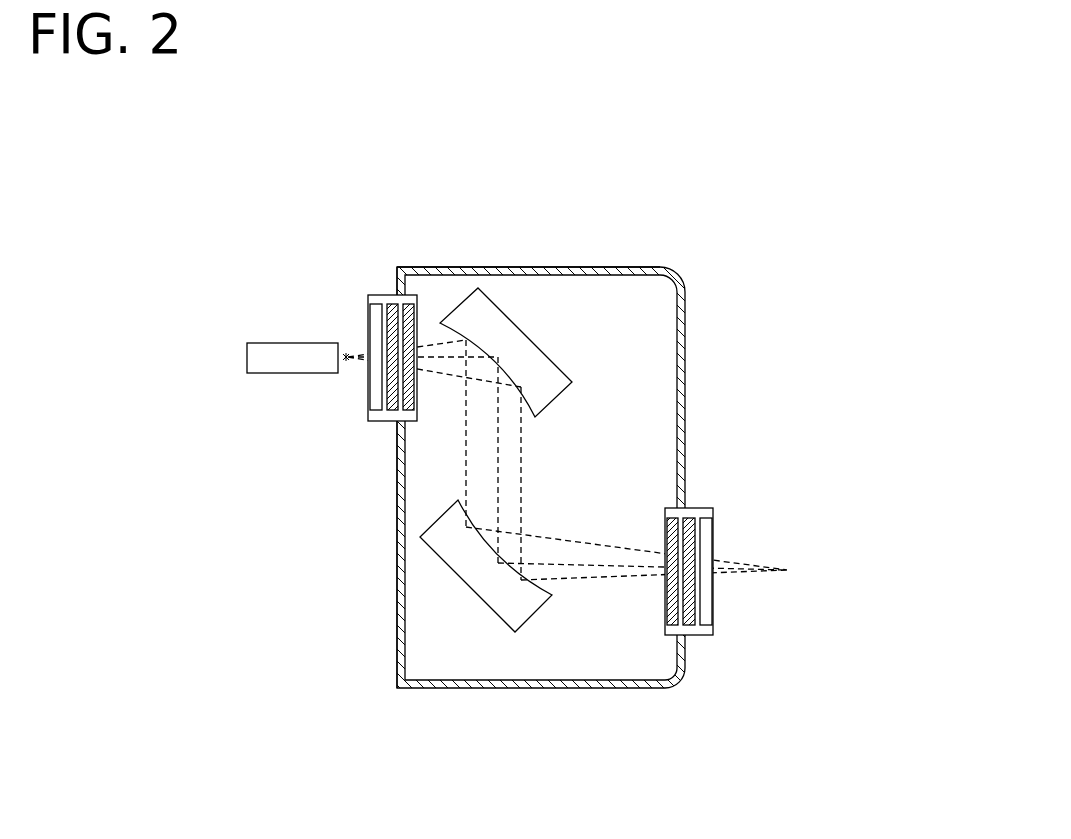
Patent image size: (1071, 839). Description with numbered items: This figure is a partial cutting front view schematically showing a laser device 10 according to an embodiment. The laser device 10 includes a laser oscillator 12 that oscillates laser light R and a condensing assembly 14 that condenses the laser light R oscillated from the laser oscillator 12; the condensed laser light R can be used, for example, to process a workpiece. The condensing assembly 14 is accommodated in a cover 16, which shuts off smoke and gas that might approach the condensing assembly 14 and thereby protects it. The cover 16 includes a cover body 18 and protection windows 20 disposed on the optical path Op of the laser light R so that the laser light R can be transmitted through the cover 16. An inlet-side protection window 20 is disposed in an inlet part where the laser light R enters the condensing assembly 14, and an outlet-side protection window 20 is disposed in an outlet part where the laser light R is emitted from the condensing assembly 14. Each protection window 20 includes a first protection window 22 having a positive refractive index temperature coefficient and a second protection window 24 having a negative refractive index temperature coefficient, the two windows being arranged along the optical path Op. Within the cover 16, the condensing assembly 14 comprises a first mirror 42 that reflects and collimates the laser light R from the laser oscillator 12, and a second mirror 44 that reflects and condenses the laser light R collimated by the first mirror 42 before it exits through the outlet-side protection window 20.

The laser device 10 is at (555, 100).
The laser oscillator 12 is at (268, 343).
The condensing assembly 14 is at (532, 300).
The cover 16 is at (427, 262).
The cover body 18 is at (481, 267).
The protection window 20 is at (356, 390).
The first protection window 22 is at (370, 397).
The second protection window 24 is at (408, 413).
The first mirror 42 is at (543, 346).
The second mirror 44 is at (472, 589).
The laser light R is at (352, 351).
The optical path Op is at (602, 565).